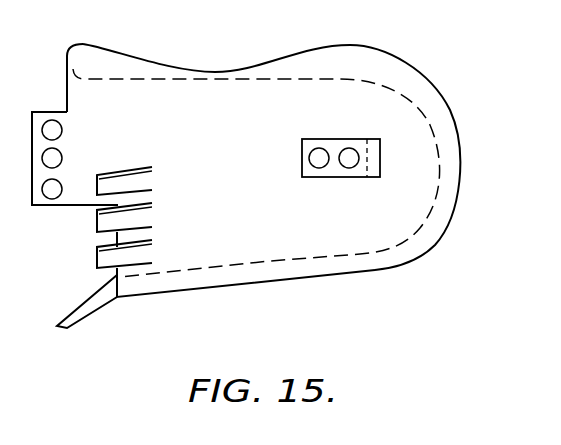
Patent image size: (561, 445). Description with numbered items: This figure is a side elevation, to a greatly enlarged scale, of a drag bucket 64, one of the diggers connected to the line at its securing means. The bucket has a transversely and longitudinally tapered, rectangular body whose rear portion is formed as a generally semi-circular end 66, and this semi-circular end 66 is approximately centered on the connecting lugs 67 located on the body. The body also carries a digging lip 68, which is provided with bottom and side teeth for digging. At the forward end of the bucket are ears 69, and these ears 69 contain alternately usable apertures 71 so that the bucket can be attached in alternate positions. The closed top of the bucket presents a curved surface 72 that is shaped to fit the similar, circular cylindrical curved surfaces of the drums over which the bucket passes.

The drag bucket 64 is at (398, 79).
The semi-circular end 66 is at (458, 188).
The connecting lugs 67 is at (347, 177).
The digging lip 68 is at (82, 316).
The ears 69 is at (30, 205).
The alternately usable apertures 71 is at (54, 167).
The curved surface 72 is at (162, 68).